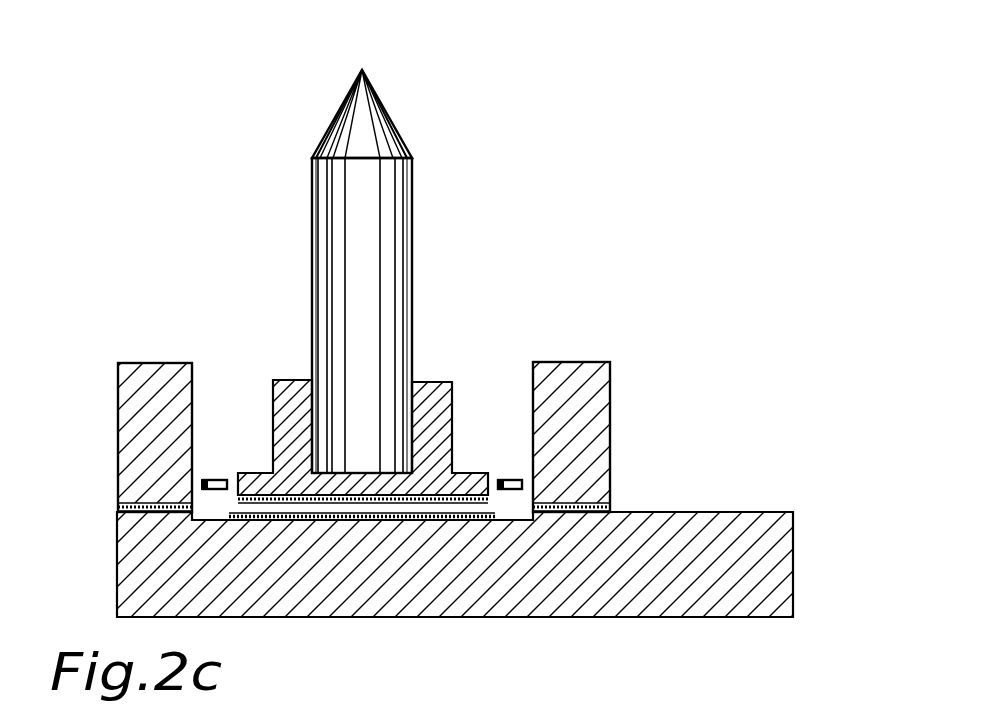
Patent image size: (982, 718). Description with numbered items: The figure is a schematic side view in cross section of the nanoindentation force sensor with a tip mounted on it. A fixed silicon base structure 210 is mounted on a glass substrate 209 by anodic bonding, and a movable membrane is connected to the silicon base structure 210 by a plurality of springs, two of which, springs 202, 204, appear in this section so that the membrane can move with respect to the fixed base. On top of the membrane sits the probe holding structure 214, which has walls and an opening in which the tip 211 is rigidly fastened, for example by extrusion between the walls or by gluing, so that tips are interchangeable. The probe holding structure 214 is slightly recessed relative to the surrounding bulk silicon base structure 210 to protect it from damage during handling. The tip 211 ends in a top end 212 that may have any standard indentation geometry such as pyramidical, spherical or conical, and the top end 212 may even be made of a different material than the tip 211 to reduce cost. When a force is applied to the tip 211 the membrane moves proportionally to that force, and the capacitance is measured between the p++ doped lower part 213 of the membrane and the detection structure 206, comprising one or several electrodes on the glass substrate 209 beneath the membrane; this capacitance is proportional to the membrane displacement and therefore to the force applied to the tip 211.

The spring 202 is at (202, 484).
The spring 204 is at (500, 490).
The detection structure 206 is at (370, 518).
The glass substrate 209 is at (678, 538).
The silicon base structure 210 is at (553, 374).
The tip 211 is at (332, 270).
The top end 212 is at (362, 70).
The p++ doped lower part 213 is at (293, 508).
The probe holding structure 214 is at (427, 382).